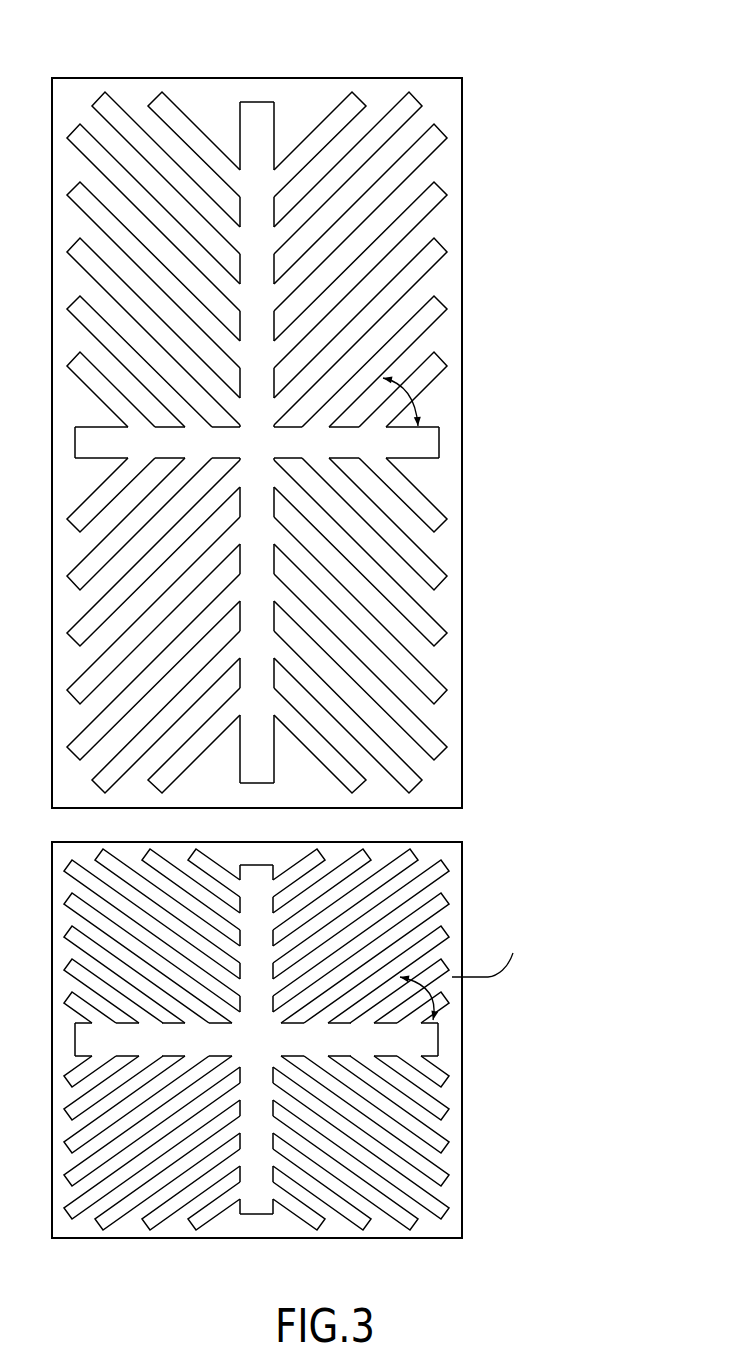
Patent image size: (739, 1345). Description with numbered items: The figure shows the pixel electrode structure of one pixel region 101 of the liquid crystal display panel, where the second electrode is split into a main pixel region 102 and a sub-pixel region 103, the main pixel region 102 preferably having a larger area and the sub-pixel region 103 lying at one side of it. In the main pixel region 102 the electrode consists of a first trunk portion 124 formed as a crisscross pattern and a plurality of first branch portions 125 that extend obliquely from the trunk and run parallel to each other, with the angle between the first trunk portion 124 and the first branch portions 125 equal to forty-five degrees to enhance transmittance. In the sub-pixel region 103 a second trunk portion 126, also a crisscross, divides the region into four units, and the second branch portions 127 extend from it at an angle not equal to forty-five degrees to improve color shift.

The pixel region 101 is at (485, 220).
The main pixel region 102 is at (463, 290).
The sub-pixel region 103 is at (463, 1133).
The first trunk portion 124 is at (287, 122).
The first branch portions 125 is at (440, 133).
The second trunk portion 126 is at (440, 1045).
The second branch portions 127 is at (433, 881).